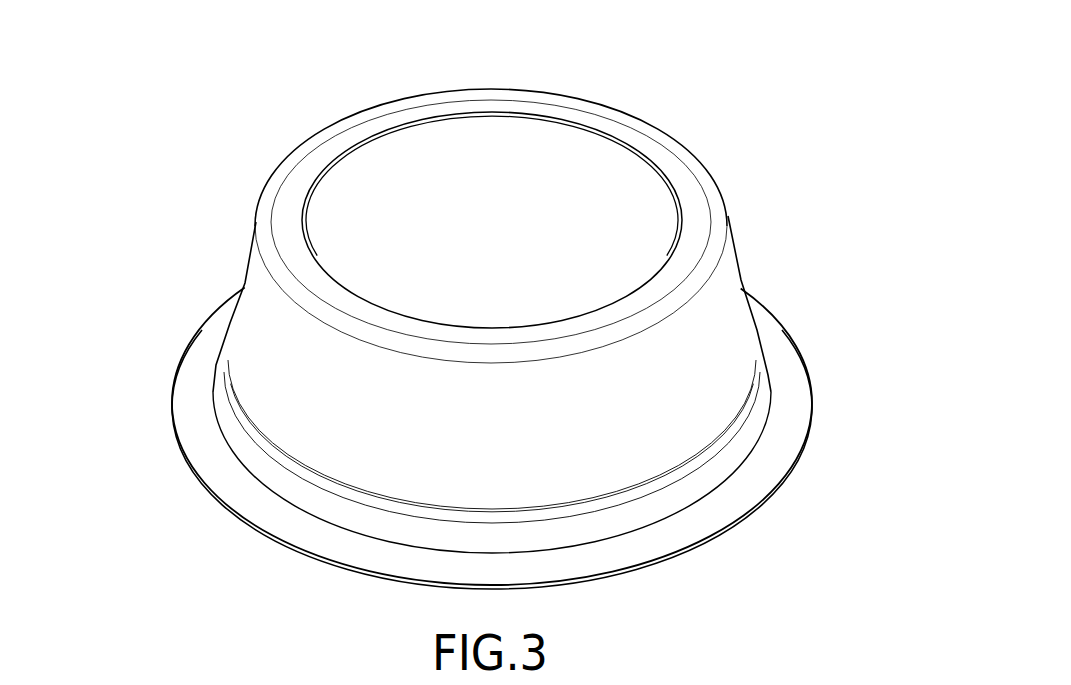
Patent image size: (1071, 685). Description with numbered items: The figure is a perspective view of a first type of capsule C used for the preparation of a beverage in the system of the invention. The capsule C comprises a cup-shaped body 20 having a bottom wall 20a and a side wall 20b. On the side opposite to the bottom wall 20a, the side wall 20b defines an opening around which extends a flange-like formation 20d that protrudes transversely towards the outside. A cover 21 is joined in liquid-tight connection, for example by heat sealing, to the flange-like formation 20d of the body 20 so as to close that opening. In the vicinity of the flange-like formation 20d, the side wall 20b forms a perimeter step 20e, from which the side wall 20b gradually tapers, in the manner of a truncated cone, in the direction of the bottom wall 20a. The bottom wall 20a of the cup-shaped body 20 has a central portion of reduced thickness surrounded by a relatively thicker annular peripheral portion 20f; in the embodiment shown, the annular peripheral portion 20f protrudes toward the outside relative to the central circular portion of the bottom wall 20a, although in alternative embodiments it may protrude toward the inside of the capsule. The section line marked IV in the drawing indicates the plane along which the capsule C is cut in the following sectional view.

The capsule C is at (531, 332).
The capsule body 20 is at (740, 260).
The opening 20a is at (527, 190).
The side wall 20b is at (327, 403).
The flange 20d is at (742, 493).
The flange junction / lower body portion 20e is at (220, 327).
The rim 20f is at (354, 132).
The flange edge 21 is at (547, 588).
The section line IV- IV is at (293, 137).